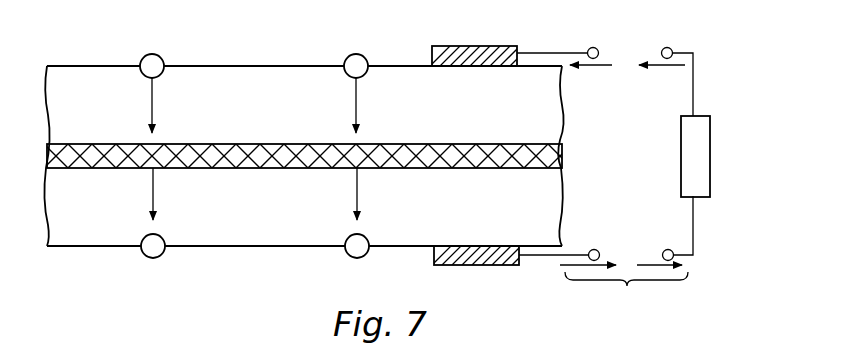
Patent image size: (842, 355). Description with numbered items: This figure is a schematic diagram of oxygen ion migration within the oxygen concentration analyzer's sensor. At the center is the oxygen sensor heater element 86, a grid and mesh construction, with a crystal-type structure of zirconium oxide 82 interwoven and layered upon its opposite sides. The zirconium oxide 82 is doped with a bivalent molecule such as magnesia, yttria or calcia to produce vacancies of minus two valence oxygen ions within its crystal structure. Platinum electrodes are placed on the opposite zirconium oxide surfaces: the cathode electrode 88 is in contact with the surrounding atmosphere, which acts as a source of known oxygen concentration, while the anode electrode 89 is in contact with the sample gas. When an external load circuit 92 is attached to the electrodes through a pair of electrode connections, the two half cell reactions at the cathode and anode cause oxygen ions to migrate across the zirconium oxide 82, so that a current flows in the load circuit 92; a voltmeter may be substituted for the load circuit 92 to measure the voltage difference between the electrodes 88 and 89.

The zirconium oxide 82 is at (248, 218).
The oxygen sensor heater element 86 is at (200, 144).
The cathode electrode 88 is at (466, 46).
The anode electrode 89 is at (498, 265).
The external load circuit 92 is at (711, 142).